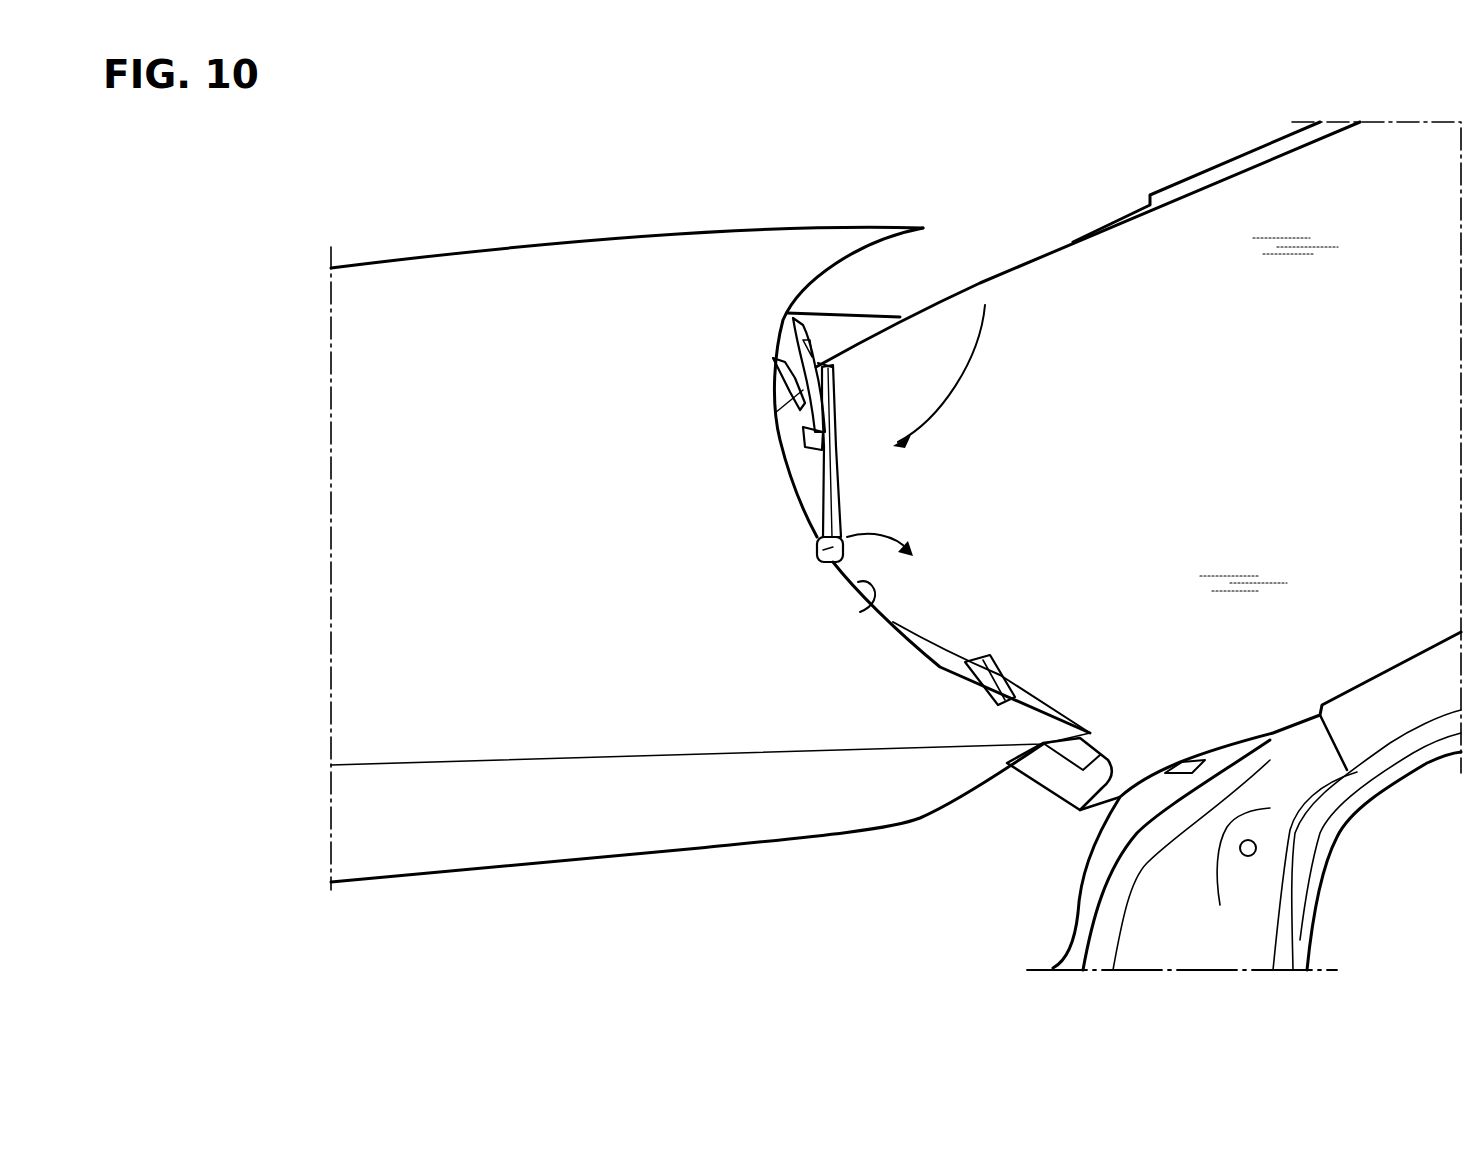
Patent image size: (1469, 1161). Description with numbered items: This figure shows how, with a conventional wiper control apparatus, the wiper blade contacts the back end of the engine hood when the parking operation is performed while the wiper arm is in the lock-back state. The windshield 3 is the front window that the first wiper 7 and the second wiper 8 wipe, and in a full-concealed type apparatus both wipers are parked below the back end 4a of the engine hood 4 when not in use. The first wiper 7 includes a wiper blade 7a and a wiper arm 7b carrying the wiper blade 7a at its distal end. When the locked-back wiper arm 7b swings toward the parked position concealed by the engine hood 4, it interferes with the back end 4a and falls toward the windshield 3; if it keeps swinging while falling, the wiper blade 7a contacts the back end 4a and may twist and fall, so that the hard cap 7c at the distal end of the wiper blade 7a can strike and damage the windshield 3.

The windshield 3 is at (1389, 195).
The engine hood 4 is at (583, 282).
The back end of the engine hood 4a is at (871, 612).
The first wiper 7 is at (847, 372).
The wiper blade 7a is at (838, 481).
The wiper arm 7b is at (819, 362).
The cap 7c is at (827, 563).
The second wiper 8 is at (1020, 690).